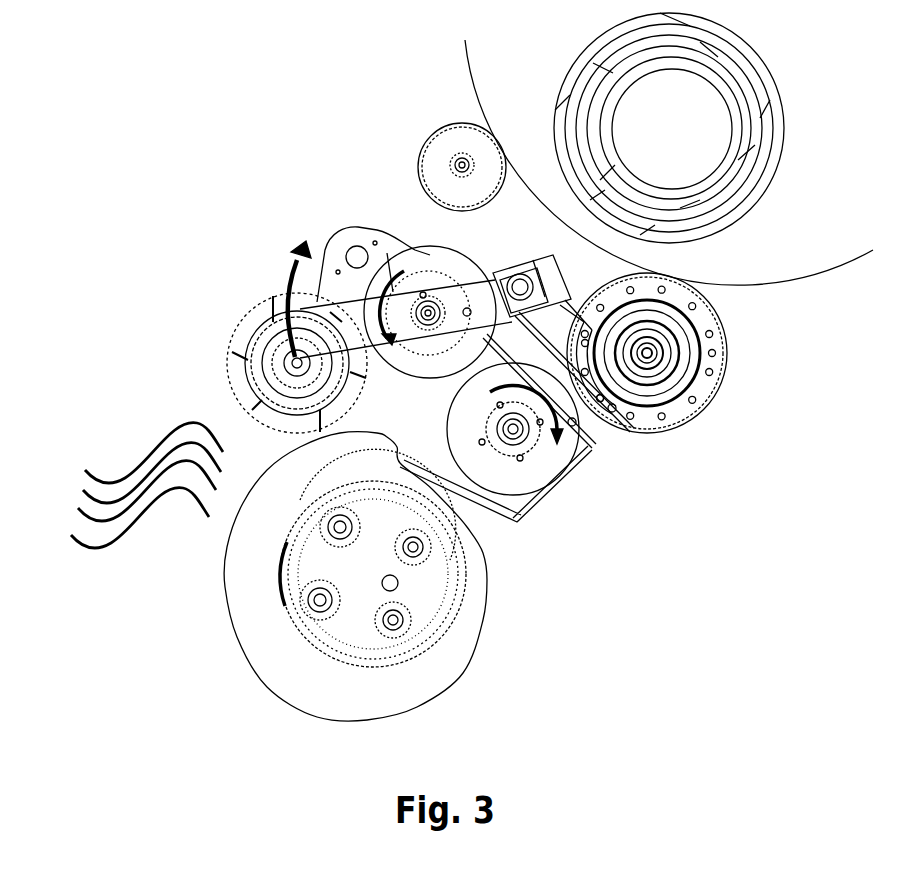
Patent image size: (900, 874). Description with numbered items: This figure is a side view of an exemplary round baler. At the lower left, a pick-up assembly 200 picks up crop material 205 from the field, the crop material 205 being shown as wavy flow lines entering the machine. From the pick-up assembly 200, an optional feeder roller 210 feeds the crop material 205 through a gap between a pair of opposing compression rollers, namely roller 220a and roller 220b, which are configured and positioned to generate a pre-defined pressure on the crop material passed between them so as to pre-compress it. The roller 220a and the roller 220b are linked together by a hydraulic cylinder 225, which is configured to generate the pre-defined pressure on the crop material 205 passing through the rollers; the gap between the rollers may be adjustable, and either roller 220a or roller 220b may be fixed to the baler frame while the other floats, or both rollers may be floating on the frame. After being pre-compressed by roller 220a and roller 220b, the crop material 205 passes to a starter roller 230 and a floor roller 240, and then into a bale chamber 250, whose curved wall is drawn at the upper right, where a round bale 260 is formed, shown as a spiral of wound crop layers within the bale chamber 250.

The pick-up assembly 200 is at (276, 612).
The crop material 205 is at (120, 486).
The feeder roller 210 is at (253, 316).
The roller 220a is at (543, 475).
The roller 220b is at (432, 366).
The hydraulic cylinder 225 is at (550, 387).
The starter roller 230 is at (440, 162).
The floor roller 240 is at (705, 383).
The bale chamber 250 is at (752, 281).
The round bale 260 is at (669, 128).